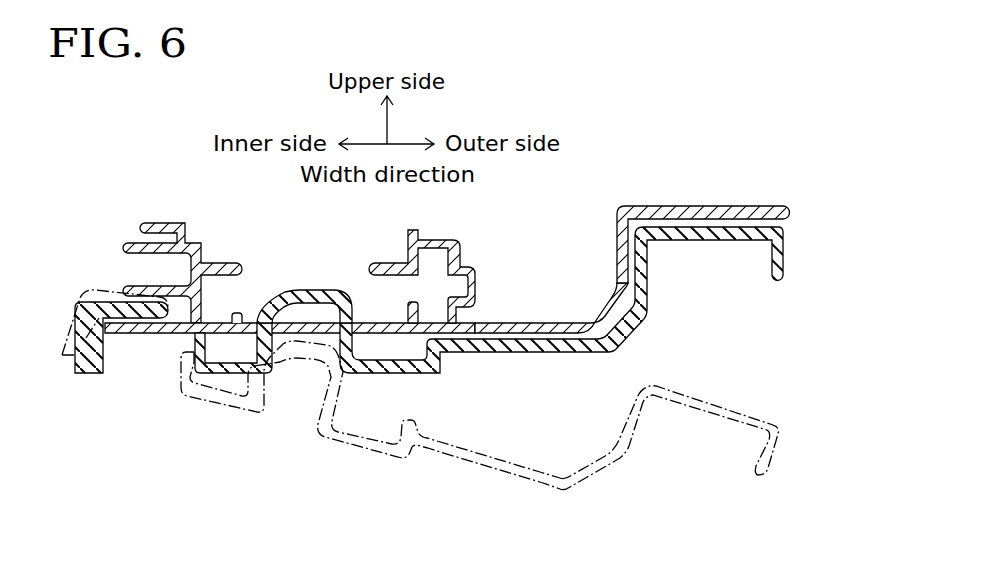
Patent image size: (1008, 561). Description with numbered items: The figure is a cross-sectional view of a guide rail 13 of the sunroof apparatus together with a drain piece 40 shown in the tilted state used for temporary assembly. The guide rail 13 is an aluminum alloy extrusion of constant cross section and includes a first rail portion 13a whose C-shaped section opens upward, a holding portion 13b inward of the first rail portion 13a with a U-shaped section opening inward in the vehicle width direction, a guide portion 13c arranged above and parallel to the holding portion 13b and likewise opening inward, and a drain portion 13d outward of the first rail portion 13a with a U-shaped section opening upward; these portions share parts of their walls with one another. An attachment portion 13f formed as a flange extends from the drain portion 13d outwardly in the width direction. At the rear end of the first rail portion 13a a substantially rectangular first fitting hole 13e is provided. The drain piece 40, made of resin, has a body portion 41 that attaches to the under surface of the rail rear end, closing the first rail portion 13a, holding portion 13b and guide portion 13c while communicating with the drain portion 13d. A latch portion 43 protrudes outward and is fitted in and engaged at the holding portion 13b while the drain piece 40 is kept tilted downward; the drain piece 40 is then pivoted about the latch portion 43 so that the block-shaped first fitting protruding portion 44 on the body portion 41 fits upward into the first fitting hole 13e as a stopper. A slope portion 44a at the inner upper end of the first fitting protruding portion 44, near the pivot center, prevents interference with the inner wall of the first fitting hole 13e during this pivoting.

The guide rail 13 is at (660, 206).
The first rail portion 13a is at (370, 322).
The holding portion 13b is at (167, 333).
The guide portion 13c is at (142, 254).
The drain portion 13d is at (527, 323).
The first fitting hole 13e is at (277, 364).
The attachment portion 13f is at (712, 209).
The drain piece 40 is at (693, 408).
The body portion 41 is at (465, 467).
The latch portion 43 is at (96, 302).
The first fitting protruding portion 44 is at (306, 290).
The slope portion 44a is at (280, 300).